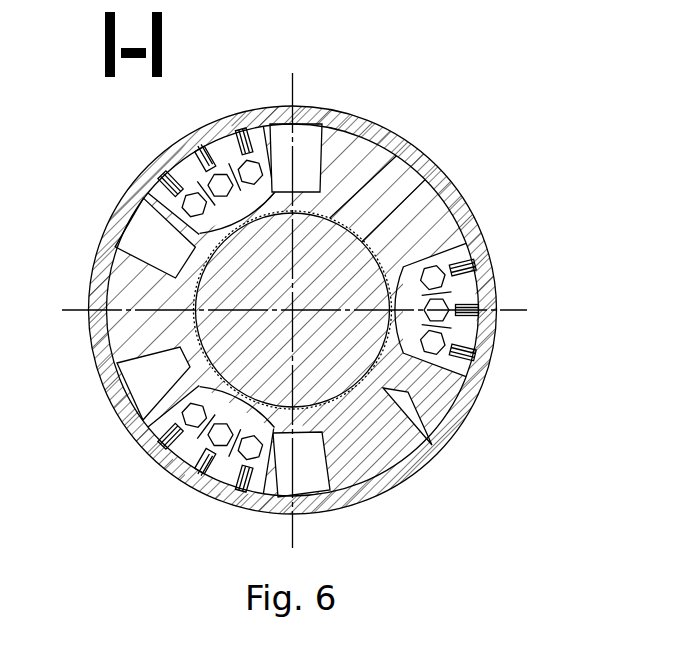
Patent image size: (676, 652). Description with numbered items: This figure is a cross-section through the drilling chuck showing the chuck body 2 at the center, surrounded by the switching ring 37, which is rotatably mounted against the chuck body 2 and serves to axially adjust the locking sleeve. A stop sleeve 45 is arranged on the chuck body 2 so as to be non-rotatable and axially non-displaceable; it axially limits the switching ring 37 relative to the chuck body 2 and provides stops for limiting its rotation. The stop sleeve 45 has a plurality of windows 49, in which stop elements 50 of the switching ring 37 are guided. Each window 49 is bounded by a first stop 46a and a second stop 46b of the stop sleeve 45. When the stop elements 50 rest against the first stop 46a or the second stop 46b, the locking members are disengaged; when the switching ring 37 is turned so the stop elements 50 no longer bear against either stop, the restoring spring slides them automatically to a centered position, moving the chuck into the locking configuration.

The chuck body 2 is at (353, 285).
The switching ring 37 is at (430, 170).
The stop sleeve 45 is at (390, 358).
The first stop 46a is at (322, 126).
The second stop 46b is at (158, 273).
The window 49 is at (283, 163).
The stop element 50 is at (250, 172).